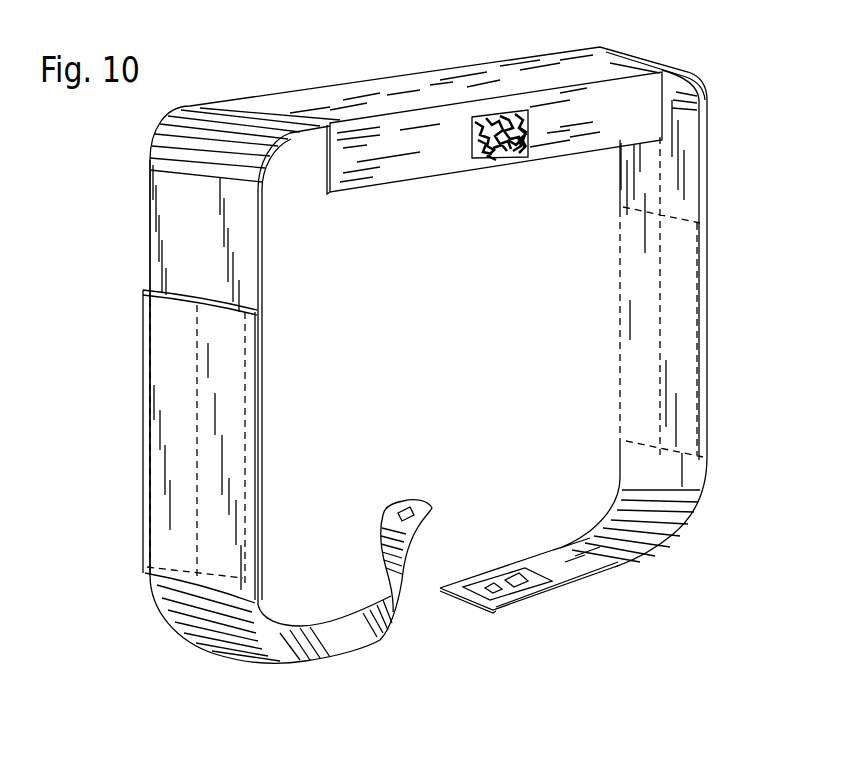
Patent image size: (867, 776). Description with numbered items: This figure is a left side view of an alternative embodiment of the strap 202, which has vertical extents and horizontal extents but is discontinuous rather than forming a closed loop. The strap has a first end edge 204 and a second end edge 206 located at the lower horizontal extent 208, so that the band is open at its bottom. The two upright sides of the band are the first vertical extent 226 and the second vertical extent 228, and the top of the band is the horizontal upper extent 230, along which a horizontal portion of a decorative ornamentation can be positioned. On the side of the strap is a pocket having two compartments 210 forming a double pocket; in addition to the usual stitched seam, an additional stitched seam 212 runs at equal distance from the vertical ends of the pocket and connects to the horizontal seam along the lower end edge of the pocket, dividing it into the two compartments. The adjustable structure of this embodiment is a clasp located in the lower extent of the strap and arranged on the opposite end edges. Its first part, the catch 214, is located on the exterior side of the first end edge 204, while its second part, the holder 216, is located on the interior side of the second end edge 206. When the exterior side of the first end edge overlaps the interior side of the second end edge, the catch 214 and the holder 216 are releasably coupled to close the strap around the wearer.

The strap 202 is at (406, 336).
The first end edge 204 is at (430, 551).
The second end edge 206 is at (530, 569).
The horizontal extent 208 is at (620, 563).
The compartments 210 is at (149, 446).
The additional stitched seam 212 is at (197, 428).
The first part (catch) 214 is at (407, 506).
The second part (holder) 216 is at (509, 576).
The first vertical extent 226 is at (174, 186).
The second vertical extent 228 is at (677, 197).
The horizontal upper extent of the strap 230 is at (510, 80).